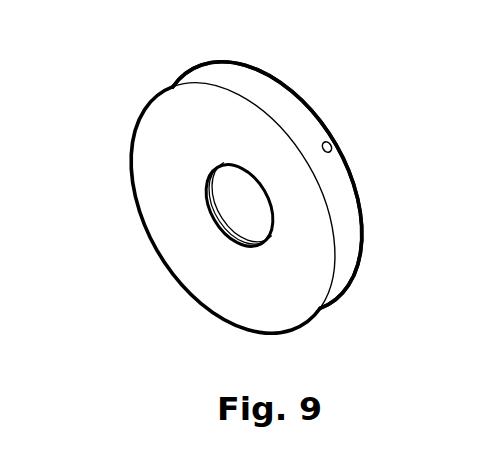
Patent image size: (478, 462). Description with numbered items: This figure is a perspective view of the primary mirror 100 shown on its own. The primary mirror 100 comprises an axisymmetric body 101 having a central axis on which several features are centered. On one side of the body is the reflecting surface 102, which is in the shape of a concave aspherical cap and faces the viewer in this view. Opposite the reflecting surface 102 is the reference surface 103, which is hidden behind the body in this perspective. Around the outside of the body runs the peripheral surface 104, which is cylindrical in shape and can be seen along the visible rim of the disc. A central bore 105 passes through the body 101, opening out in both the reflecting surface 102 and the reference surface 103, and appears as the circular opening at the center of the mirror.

The primary mirror 100 is at (252, 167).
The axisymmetric body 101 is at (255, 93).
The reflecting surface 102 is at (160, 183).
The reference surface 103 is at (352, 157).
The peripheral surface 104 is at (310, 110).
The central bore 105 is at (224, 210).